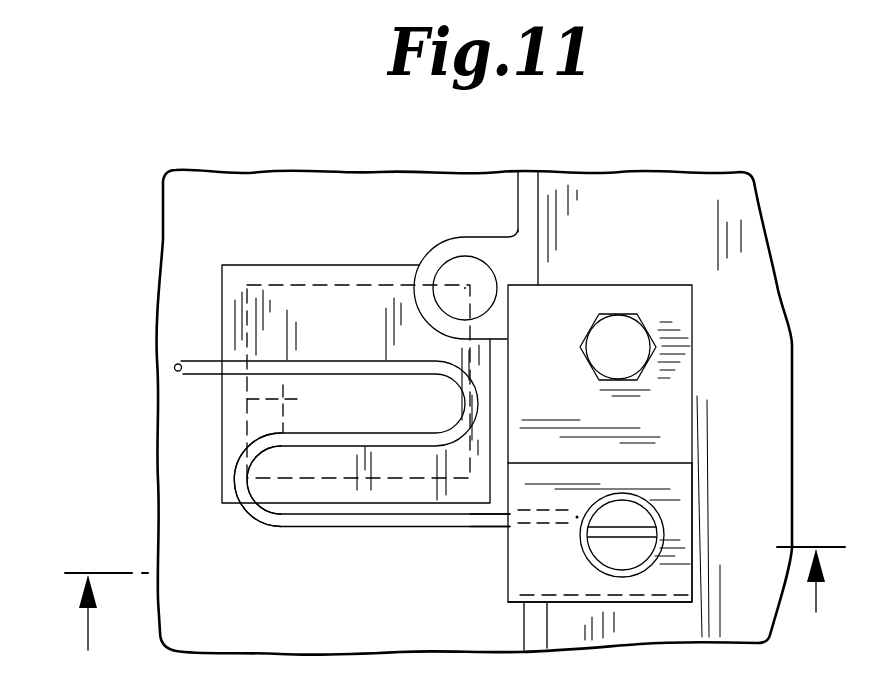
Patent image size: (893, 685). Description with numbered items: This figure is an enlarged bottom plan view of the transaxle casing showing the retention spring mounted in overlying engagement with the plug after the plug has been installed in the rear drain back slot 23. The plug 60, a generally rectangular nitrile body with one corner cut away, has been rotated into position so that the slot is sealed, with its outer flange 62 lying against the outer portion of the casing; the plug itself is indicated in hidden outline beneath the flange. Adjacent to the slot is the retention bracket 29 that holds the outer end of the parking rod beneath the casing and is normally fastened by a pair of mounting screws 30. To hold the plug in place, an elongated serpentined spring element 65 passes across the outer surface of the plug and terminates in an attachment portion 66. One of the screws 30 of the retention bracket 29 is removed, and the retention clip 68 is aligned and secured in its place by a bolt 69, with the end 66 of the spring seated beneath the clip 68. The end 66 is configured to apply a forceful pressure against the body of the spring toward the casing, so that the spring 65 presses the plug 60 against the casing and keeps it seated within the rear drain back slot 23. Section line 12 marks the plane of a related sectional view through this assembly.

The section line 12- 12 is at (453, 598).
The rear drain back slot 23 is at (297, 399).
The retention bracket 29 is at (675, 413).
The mounting screws 30 is at (627, 313).
The rear drain back slot plug 60 is at (348, 343).
The flange 62 is at (298, 222).
The serpentined spring element 65 is at (333, 528).
The attachment portion 66 is at (510, 517).
The retention clip 68 is at (683, 569).
The bolt 69 is at (640, 512).